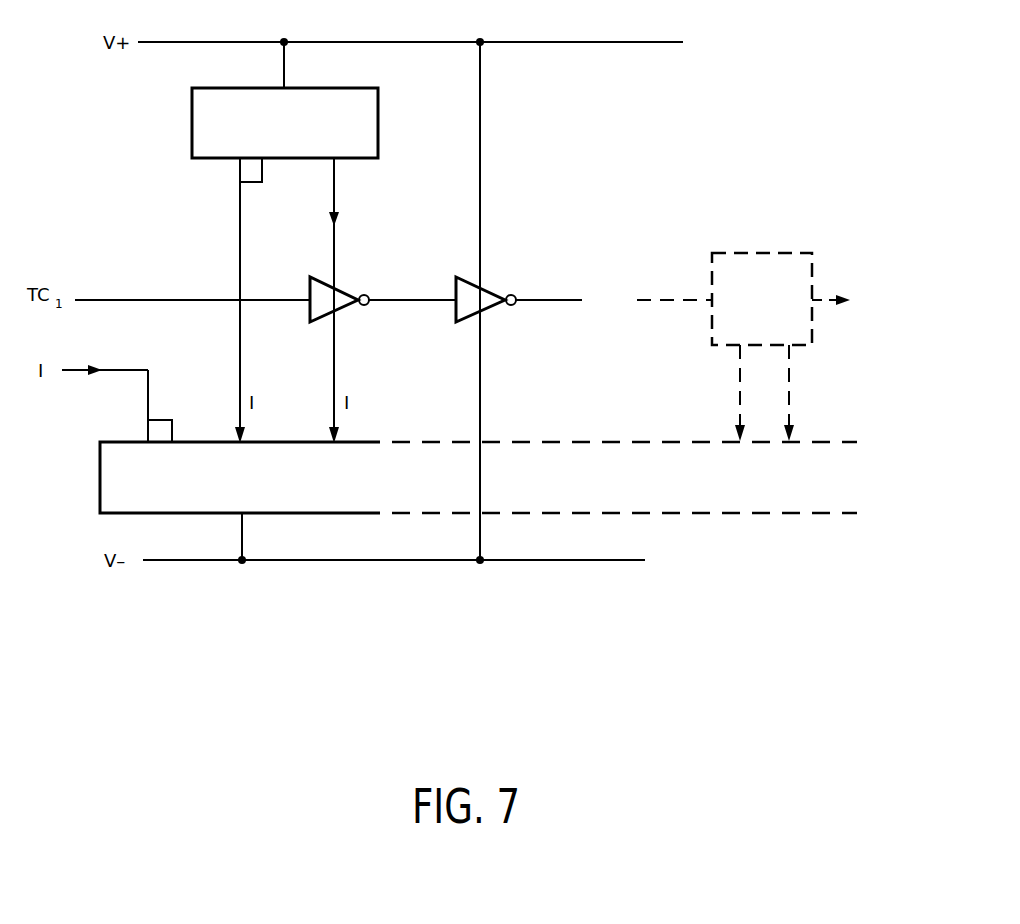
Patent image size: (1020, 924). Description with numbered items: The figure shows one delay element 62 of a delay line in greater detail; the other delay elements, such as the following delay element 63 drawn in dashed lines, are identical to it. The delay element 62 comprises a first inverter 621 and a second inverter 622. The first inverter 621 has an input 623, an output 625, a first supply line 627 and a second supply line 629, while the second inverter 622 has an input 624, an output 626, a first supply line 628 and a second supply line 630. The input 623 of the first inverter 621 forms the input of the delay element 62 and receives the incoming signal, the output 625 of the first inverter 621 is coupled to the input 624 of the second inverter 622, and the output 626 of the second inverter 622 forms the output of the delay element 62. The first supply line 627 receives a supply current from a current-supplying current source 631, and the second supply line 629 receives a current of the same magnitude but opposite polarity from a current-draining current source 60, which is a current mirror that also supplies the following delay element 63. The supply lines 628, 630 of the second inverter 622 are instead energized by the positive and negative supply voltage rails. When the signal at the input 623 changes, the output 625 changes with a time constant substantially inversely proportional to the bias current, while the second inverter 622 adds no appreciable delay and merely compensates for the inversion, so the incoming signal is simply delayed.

The current-draining current source 60 is at (110, 468).
The delay element 62 is at (229, 645).
The following delay element 63 is at (800, 275).
The first inverter 621 is at (339, 297).
The second inverter 622 is at (484, 298).
The input of the first inverter 623 is at (273, 302).
The input of the second inverter 624 is at (422, 302).
The output of the first inverter 625 is at (364, 306).
The output of the second inverter 626 is at (512, 306).
The first supply line of the first inverter 627 is at (333, 283).
The first supply line of the second inverter 628 is at (481, 286).
The second supply line of the first inverter 629 is at (332, 318).
The second supply line of the second inverter 630 is at (478, 318).
The current-supplying current source 631 is at (372, 110).